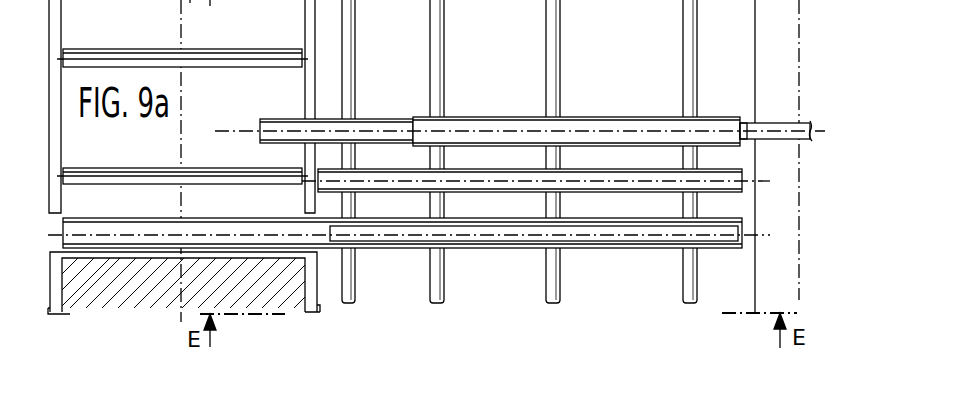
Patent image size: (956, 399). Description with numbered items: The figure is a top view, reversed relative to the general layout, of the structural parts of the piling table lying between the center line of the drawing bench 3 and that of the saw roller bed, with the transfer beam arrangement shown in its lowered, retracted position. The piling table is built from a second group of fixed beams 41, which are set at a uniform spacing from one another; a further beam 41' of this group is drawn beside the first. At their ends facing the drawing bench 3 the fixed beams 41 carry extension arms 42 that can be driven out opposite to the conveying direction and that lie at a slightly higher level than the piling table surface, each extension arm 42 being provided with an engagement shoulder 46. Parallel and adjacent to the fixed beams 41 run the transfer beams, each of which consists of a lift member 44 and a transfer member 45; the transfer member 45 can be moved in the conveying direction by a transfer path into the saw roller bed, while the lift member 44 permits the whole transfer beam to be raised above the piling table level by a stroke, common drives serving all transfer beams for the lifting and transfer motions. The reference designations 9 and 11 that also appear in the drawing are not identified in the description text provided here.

The frame structure 9 is at (132, 6).
The support posts 11 is at (567, 151).
The drawing bench 3 is at (800, 64).
The fixed beam 41 is at (336, 99).
The extension arm 42 is at (500, 128).
The engagement shoulder 46 is at (745, 117).
The transfer member 45 is at (488, 234).
The rod section 41' is at (530, 238).
The lift member 44 is at (618, 248).